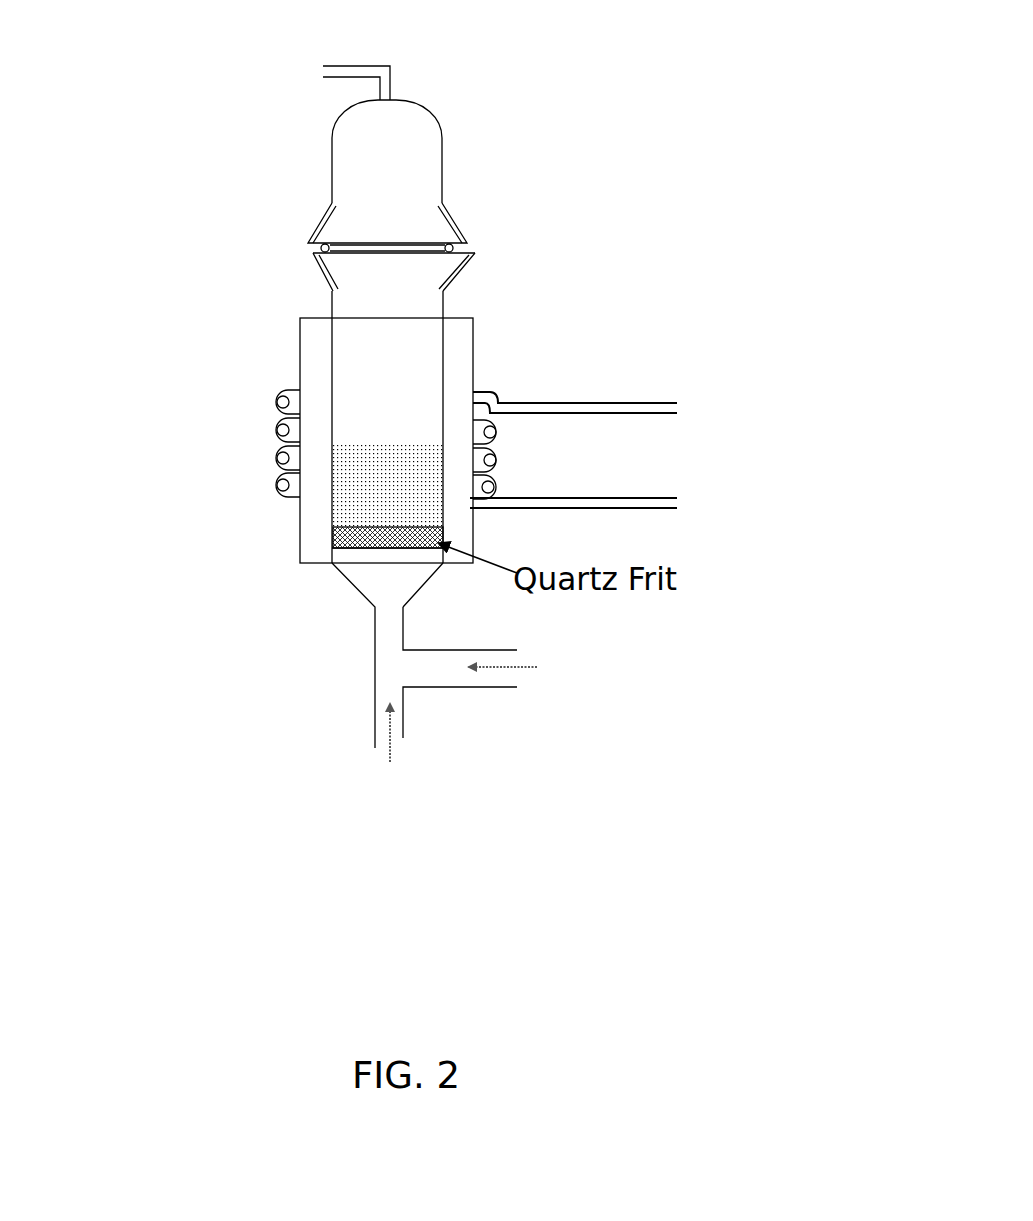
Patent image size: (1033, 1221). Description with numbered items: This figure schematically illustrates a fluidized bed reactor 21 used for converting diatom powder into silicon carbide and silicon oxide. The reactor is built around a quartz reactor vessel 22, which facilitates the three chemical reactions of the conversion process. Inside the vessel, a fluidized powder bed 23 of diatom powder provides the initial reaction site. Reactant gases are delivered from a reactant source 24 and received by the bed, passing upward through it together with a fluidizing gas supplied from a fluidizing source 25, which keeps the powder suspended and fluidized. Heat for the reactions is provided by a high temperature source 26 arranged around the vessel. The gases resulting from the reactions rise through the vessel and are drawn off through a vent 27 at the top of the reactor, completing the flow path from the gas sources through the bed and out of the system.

The fluidized bed reactor 21 is at (482, 79).
The quartz reactor vessel 22 is at (323, 302).
The fluidized powder bed 23 is at (360, 502).
The reactant source 24 is at (438, 658).
The fluidizing source 25 is at (397, 775).
The high temperature source 26 is at (565, 404).
The vent 27 is at (317, 72).